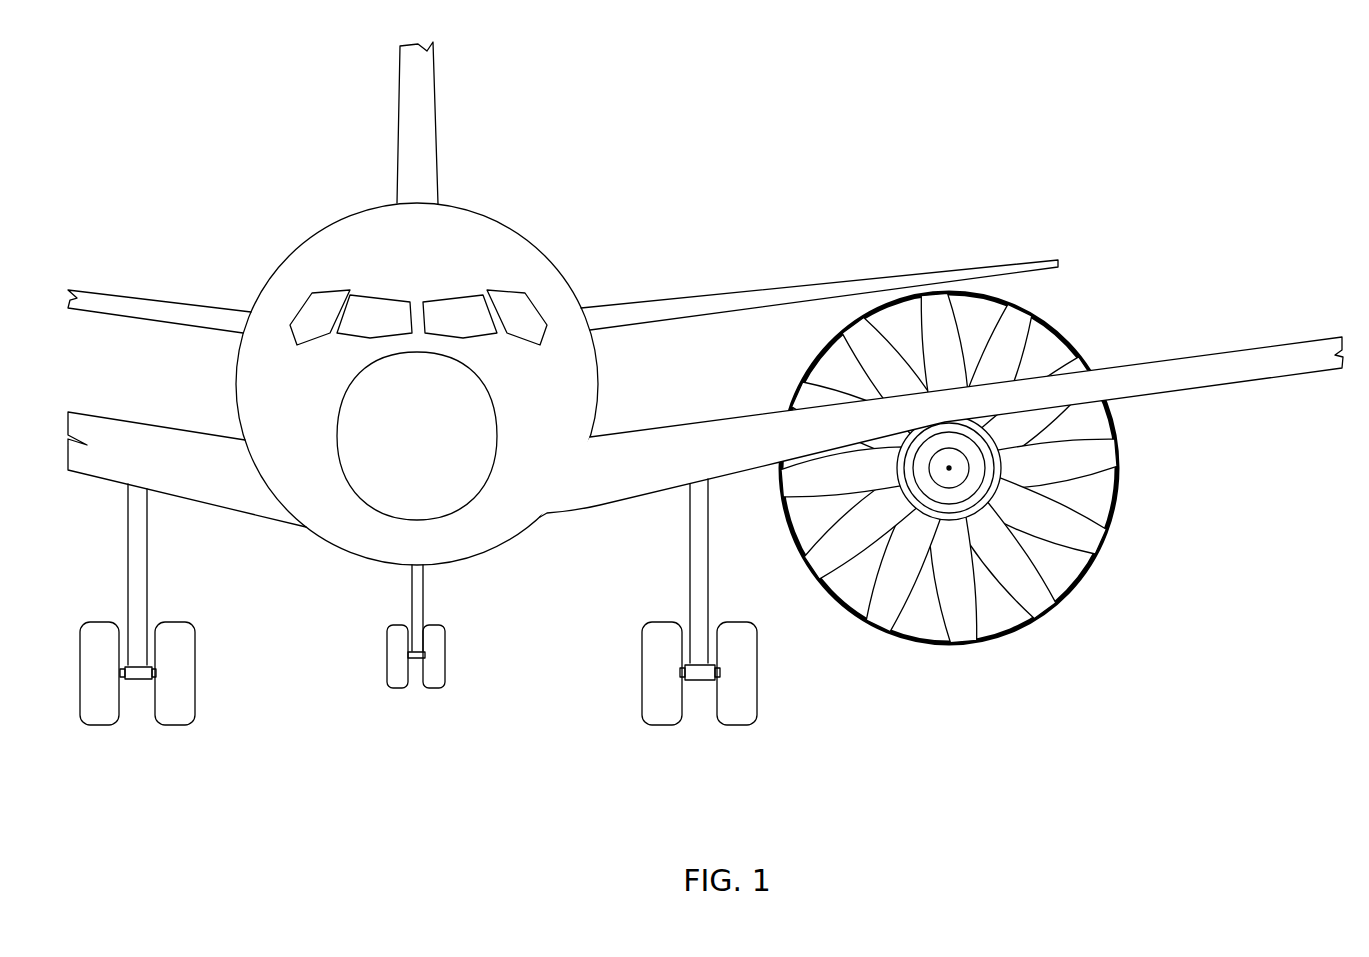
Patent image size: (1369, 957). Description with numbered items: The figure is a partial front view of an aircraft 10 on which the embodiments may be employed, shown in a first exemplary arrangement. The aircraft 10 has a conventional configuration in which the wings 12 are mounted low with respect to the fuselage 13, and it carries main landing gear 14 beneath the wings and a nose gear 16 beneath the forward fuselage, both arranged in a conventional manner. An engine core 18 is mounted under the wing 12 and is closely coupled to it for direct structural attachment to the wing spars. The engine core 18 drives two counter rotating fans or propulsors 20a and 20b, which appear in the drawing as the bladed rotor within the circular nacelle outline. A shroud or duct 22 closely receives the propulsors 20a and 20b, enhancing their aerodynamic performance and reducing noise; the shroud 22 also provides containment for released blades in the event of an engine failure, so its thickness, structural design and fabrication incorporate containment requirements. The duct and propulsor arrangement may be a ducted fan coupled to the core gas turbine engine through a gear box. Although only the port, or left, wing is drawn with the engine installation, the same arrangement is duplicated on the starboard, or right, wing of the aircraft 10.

The aircraft 10 is at (705, 385).
The wings 12 is at (129, 420).
The fuselage 13 is at (541, 250).
The main landing gear 14 is at (148, 558).
The nose gear 16 is at (423, 590).
The engine core 18 is at (986, 511).
The propulsor 20a is at (1073, 541).
The propulsor 20b is at (1075, 504).
The shroud or duct 22 is at (1070, 347).